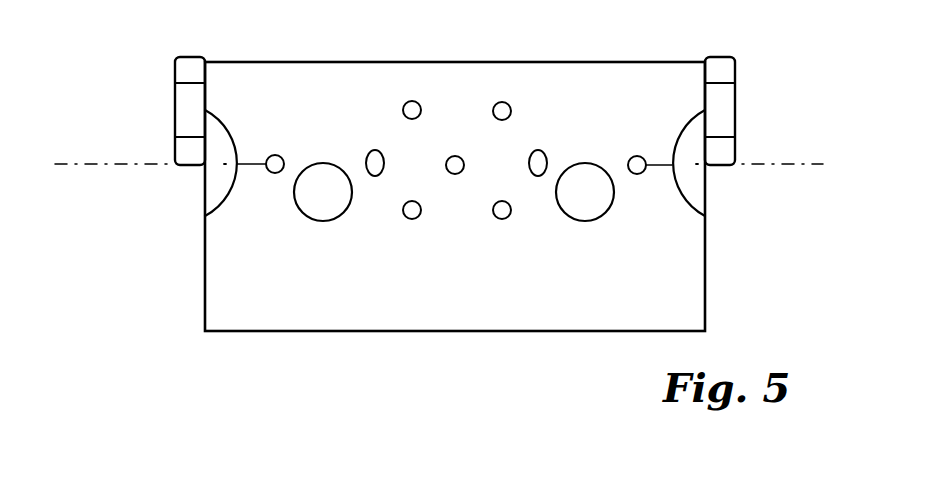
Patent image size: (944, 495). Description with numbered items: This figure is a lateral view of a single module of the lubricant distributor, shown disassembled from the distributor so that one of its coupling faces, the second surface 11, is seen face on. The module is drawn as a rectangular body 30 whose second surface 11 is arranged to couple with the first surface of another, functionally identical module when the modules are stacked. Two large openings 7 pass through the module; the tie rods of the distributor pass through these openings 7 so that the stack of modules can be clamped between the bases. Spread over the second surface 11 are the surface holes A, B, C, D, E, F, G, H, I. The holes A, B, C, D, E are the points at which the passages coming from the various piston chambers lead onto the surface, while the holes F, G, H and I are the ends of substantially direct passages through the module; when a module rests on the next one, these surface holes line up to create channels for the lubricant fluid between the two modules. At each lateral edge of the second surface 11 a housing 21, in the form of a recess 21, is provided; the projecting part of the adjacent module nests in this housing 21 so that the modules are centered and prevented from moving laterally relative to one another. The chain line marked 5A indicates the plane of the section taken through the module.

The section line 5A- 5A is at (72, 152).
The opening 7 is at (313, 164).
The second surface 11 is at (645, 85).
The housing 21 is at (213, 182).
The plate body 30 is at (205, 298).
The surface hole A is at (270, 172).
The surface hole B is at (368, 156).
The surface hole C is at (457, 174).
The surface hole D is at (541, 152).
The surface hole E is at (642, 172).
The surface hole F is at (496, 106).
The surface hole G is at (418, 104).
The surface hole H is at (405, 218).
The surface hole I is at (508, 219).